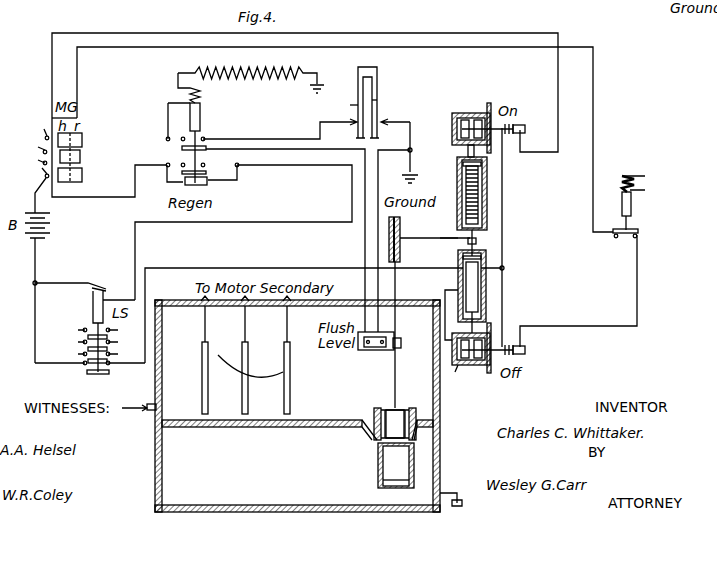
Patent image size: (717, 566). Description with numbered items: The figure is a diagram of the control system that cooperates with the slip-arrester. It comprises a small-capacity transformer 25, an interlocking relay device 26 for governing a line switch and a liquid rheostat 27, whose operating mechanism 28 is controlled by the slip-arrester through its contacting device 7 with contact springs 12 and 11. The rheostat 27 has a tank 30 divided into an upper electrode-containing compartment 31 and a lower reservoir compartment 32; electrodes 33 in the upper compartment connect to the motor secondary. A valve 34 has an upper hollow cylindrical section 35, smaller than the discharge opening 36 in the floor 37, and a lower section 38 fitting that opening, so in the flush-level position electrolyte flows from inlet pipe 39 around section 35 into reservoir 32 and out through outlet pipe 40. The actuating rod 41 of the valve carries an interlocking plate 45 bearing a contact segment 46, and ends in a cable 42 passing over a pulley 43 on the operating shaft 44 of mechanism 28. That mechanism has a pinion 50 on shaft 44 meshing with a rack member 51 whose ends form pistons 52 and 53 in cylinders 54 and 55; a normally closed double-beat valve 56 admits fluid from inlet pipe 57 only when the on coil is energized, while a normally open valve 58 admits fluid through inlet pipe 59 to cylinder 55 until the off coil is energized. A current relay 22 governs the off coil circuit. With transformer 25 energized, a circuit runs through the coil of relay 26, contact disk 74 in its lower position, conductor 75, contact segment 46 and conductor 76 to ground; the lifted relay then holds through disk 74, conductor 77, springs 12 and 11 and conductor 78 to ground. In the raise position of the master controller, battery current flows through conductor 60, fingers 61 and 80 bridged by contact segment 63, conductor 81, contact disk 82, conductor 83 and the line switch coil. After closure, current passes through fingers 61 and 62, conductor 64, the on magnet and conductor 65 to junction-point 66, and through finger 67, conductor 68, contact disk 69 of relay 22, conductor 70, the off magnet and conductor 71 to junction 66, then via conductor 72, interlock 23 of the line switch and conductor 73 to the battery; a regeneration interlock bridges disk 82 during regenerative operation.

The contacting device 7 is at (375, 102).
The contact spring 11 is at (378, 100).
The contact spring 12 is at (347, 104).
The current relay or limit switch 22 is at (634, 195).
The interlock 23 is at (86, 374).
The transformer 25 is at (258, 88).
The interlocking relay device 26 is at (195, 128).
The liquid rheostat 27 is at (343, 284).
The operating mechanism 28 is at (447, 229).
The containing case or tank 30 is at (152, 386).
The upper electrode-containing compartment 31 is at (181, 368).
The lower discharge or reservoir compartment 32 is at (194, 467).
The electrodes 33 is at (246, 355).
The valve 34 is at (378, 465).
The upper hollow cylindrical section 35 is at (410, 412).
The discharge opening or well 36 is at (368, 418).
The floor 37 is at (328, 422).
The lower hollow cylindrical section 38 is at (378, 478).
The inlet pipe or passage 39 is at (154, 404).
The outlet pipe 40 is at (457, 510).
The actuating shaft or rod 41 is at (401, 346).
The rope or cable 42 is at (397, 276).
The pulley or sheave 43 is at (406, 233).
The operating shaft 44 is at (406, 240).
The interlocking plate or board 45 is at (360, 350).
The contact segment 46 is at (388, 350).
The pinion 50 is at (476, 244).
The rack member 51 is at (479, 204).
The piston 52 is at (481, 165).
The piston 53 is at (463, 260).
The operating cylinder 54 is at (459, 182).
The operating cylinder 55 is at (458, 288).
The normally closed valve 56 is at (470, 116).
The inlet pipe 57 is at (458, 116).
The normally open valve 58 is at (480, 366).
The inlet pipe 59 is at (455, 373).
The conductor 60 is at (31, 175).
The control finger 61 is at (35, 132).
The control finger 62 is at (30, 145).
The contact segment 63 is at (82, 146).
The conductor 64 is at (52, 87).
The conductor 65 is at (502, 230).
The junction-point 66 is at (504, 268).
The control finger 67 is at (30, 160).
The conductor 68 is at (77, 67).
The contact disk 69 is at (617, 238).
The conductor 70 is at (576, 326).
The conductor 71 is at (502, 301).
The conductor 72 is at (172, 268).
The conductor 73 is at (35, 298).
The contact disk 74 is at (205, 140).
The conductor 75 is at (320, 164).
The conductor 76 is at (384, 160).
The conductor 77 is at (280, 129).
The conductor 78 is at (412, 124).
The control finger 80 is at (29, 195).
The conductor 81 is at (135, 185).
The contact disk 82 is at (207, 178).
The conductor 83 is at (322, 165).